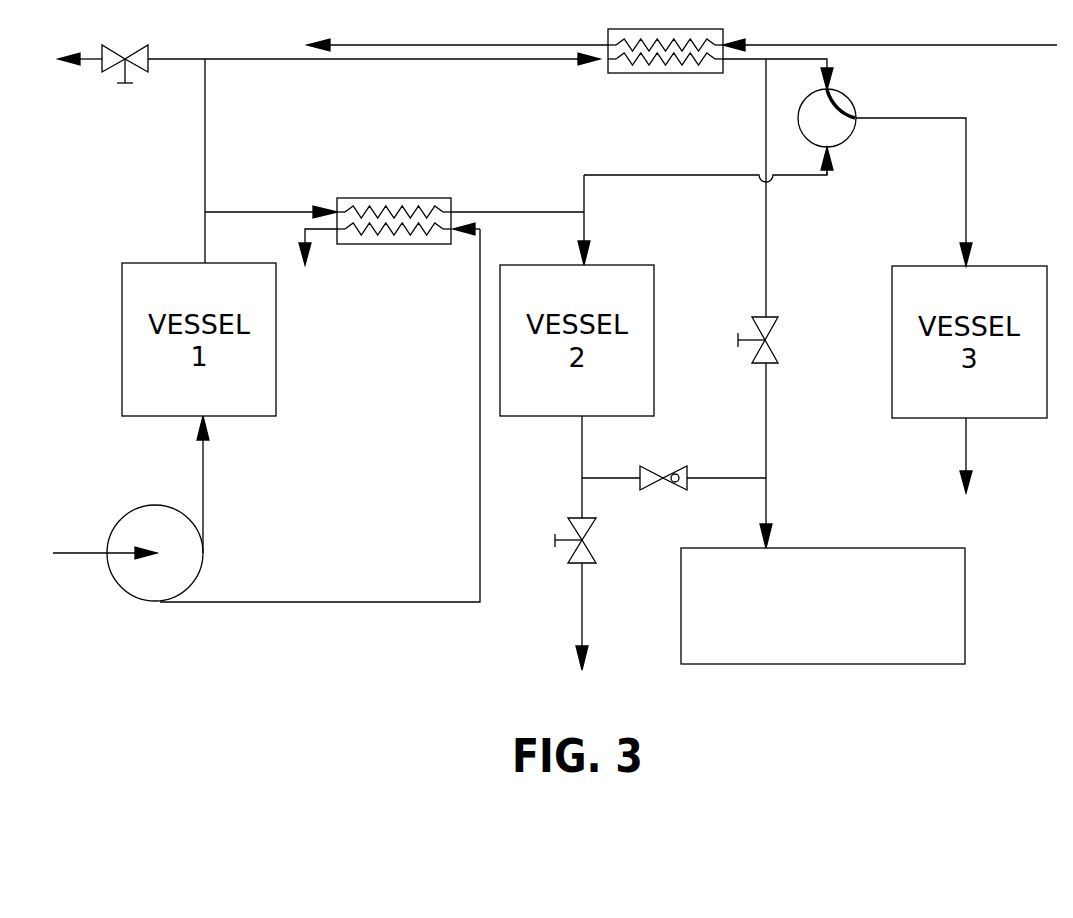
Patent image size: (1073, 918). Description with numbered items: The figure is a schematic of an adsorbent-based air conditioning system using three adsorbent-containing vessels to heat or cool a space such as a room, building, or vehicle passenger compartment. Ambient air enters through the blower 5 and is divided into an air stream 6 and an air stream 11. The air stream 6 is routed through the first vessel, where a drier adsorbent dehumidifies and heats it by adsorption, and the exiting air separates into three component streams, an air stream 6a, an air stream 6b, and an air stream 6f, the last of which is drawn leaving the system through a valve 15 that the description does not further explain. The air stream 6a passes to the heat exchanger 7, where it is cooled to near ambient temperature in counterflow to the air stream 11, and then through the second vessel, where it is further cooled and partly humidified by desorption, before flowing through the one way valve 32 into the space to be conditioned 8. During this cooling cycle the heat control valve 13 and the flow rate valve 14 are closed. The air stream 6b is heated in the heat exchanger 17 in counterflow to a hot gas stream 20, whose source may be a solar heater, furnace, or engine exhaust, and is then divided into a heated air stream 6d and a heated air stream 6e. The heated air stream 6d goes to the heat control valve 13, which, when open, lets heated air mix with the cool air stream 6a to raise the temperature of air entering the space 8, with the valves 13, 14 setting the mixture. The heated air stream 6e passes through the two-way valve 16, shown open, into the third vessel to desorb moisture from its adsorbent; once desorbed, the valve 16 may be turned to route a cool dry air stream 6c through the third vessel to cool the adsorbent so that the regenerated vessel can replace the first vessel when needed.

The blower 5 is at (158, 590).
The air stream 6 is at (205, 485).
The air stream 6a is at (208, 213).
The air stream 6b is at (205, 145).
The cool dry air stream 6c is at (616, 178).
The heated air stream 6d is at (765, 138).
The heated air stream 6e is at (820, 62).
The air stream 6f is at (180, 62).
The heat exchanger 7 is at (438, 240).
The space to be conditioned 8 is at (750, 656).
The air stream 11 is at (478, 494).
The heat control valve 13 is at (771, 330).
The flow rate valve 14 is at (592, 553).
The valve 15 is at (150, 56).
The two-way valve 16 is at (835, 132).
The heat exchanger 17 is at (710, 70).
The hot gas stream 20 is at (770, 46).
The one way valve 32 is at (677, 470).